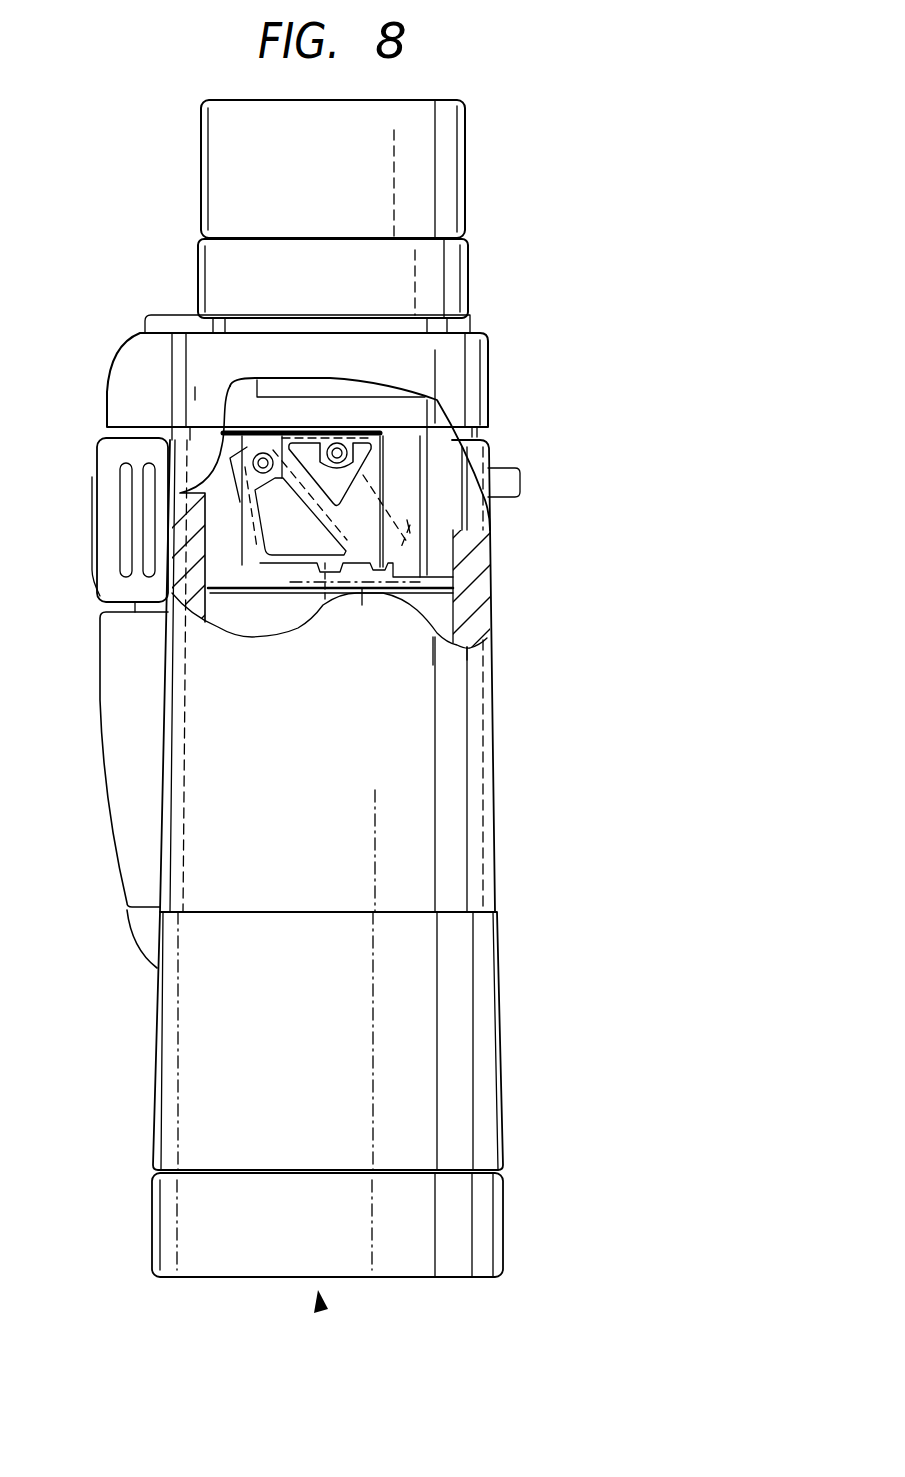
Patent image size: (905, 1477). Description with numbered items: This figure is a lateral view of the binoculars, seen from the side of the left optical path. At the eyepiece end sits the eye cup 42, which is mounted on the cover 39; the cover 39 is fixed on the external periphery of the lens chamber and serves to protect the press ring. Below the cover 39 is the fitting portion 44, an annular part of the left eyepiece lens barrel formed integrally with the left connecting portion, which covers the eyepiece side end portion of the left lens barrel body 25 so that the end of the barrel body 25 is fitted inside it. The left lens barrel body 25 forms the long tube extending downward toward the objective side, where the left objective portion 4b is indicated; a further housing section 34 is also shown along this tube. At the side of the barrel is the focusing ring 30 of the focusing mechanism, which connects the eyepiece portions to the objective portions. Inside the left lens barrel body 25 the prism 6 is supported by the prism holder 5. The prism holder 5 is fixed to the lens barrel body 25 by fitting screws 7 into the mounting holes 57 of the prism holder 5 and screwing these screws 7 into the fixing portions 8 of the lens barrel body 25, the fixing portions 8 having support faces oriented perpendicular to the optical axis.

The eye cup 42 is at (447, 178).
The cover 39 is at (447, 283).
The fitting portion 44 is at (468, 390).
The left lens barrel body 25 is at (467, 793).
The lower housing section 34 is at (482, 1035).
The focusing ring 30 is at (107, 530).
The mounting holes 57 is at (420, 600).
The prism holder 5 is at (400, 473).
The prism 6 is at (420, 487).
The screws 7 is at (333, 562).
The fixing portions 8 is at (420, 600).
The left objective portion 4b is at (321, 1312).